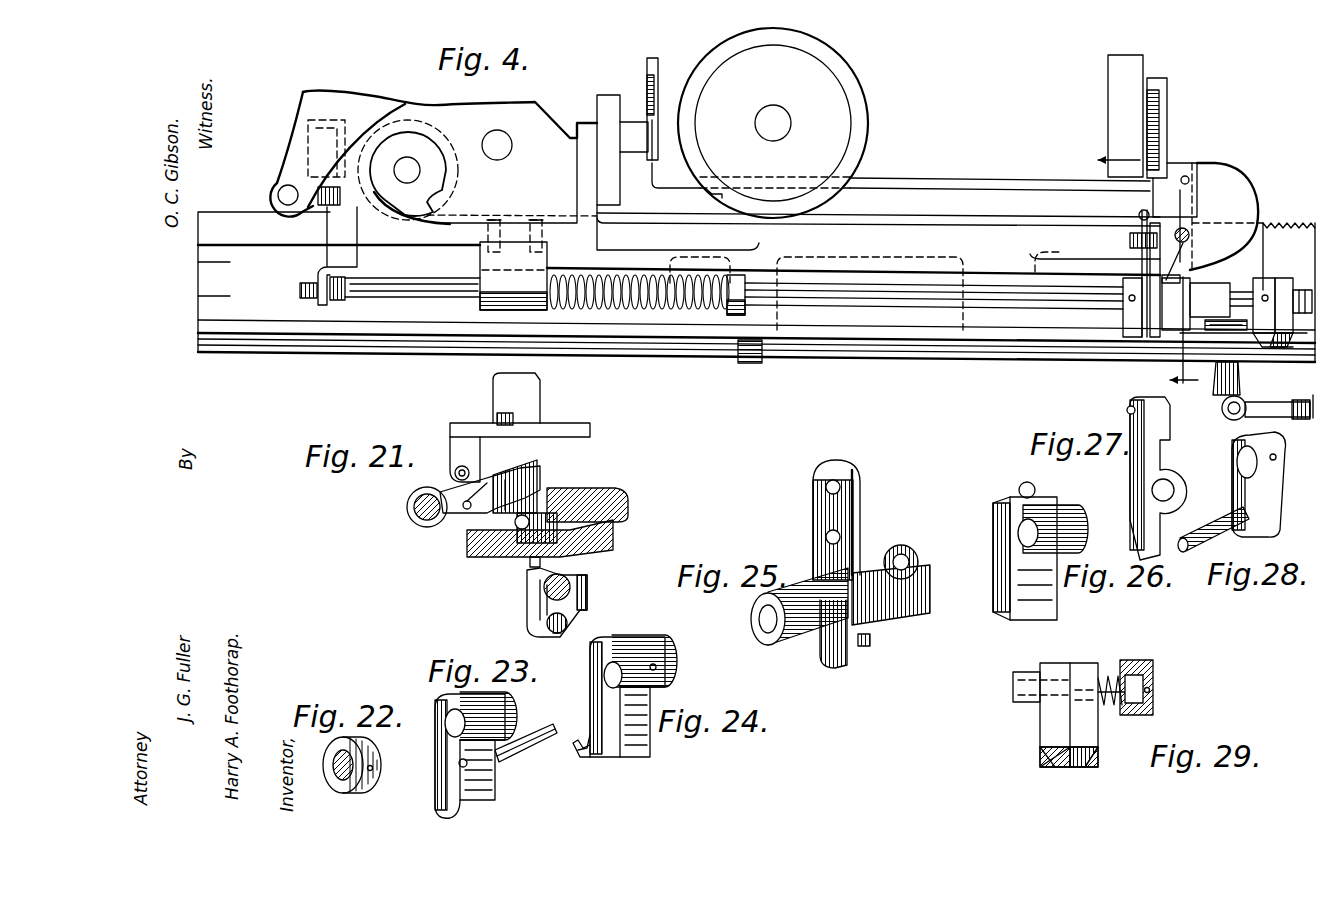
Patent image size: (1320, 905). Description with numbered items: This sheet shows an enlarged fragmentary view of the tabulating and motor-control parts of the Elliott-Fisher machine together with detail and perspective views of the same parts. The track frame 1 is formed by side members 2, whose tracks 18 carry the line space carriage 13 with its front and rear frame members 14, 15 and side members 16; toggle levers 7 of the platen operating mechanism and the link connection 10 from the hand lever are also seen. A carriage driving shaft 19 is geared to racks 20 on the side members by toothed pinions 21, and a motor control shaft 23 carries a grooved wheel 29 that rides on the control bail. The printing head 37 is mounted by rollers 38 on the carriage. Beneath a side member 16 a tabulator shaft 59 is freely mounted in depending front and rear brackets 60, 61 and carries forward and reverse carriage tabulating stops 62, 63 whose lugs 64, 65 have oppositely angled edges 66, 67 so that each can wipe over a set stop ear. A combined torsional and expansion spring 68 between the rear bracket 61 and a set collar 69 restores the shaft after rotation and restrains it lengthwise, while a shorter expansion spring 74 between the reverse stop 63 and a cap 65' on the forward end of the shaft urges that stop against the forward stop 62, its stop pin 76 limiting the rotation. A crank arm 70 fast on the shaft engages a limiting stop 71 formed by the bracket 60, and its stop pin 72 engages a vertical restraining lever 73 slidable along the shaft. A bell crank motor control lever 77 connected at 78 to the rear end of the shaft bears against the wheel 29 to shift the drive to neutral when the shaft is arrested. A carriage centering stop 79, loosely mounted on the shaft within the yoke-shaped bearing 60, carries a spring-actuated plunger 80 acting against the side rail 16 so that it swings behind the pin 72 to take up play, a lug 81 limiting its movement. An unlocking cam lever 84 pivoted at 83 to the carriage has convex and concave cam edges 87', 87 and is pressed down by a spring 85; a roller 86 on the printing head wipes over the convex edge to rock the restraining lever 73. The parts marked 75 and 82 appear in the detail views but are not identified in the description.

In FIG. 4, the track frame 1 is at (208, 263).
In FIG. 4, the side members 2 is at (212, 295).
In FIG. 4, the toggle levers 7 is at (1241, 383).
In FIG. 4, the link connection 10 is at (1300, 405).
In FIG. 4, the line space carriage 13 is at (558, 90).
In FIG. 4, the front frame member 14 is at (1167, 173).
In FIG. 4, the rear frame member 15 is at (608, 97).
In FIG. 4, the side members 16 is at (944, 246).
In FIG. 21, the side members 16 is at (610, 489).
In FIG. 4, the tracks 18 is at (214, 212).
In FIG. 4, the carriage driving shaft 19 is at (505, 124).
In FIG. 4, the racks 20 is at (1312, 217).
In FIG. 4, the toothed pinions 21 is at (1134, 275).
In FIG. 4, the motor control shaft 23 is at (413, 175).
In FIG. 4, the grooved wheel 29 is at (372, 188).
In FIG. 4, the printing head 37 is at (901, 123).
In FIG. 21, the printing head 37 is at (541, 418).
In FIG. 4, the rollers 38 is at (1167, 84).
In FIG. 4, the tabulator shaft 59 is at (900, 298).
In FIG. 21, the tabulator shaft 59 is at (572, 586).
In FIG. 29, the tabulator shaft 59 is at (1023, 680).
In FIG. 4, the front bracket 60 is at (1178, 305).
In FIG. 25, the front bracket 60 is at (862, 508).
In FIG. 4, the rear bracket 61 is at (513, 265).
In FIG. 4, the forward carriage tabulating stop 62 is at (1265, 290).
In FIG. 24, the forward carriage tabulating stop 62 is at (633, 732).
In FIG. 29, the forward carriage tabulating stop 62 is at (1043, 713).
In FIG. 4, the reverse carriage tabulating stop 63 is at (1287, 292).
In FIG. 23, the reverse carriage tabulating stop 63 is at (492, 787).
In FIG. 29, the reverse carriage tabulating stop 63 is at (1090, 730).
In FIG. 4, the lug 64 is at (1262, 345).
In FIG. 24, the lug 64 is at (580, 760).
In FIG. 29, the lug 64 is at (1047, 748).
In FIG. 4, the lug 65 is at (1283, 329).
In FIG. 23, the lug 65 is at (456, 755).
In FIG. 29, the lug 65 is at (1102, 750).
In FIG. 22, the cap 65' is at (368, 762).
In FIG. 29, the cap 65' is at (1151, 676).
In FIG. 4, the angled edge 66 is at (1225, 332).
In FIG. 24, the angled edge 66 is at (587, 738).
In FIG. 29, the angled edge 66 is at (1045, 760).
In FIG. 4, the angled edge 67 is at (1318, 412).
In FIG. 29, the angled edge 67 is at (1097, 760).
In FIG. 4, the combined torsional and expansion spring 68 is at (697, 310).
In FIG. 4, the set collar 69 is at (745, 309).
In FIG. 4, the crank arm 70 is at (1125, 322).
In FIG. 28, the crank arm 70 is at (1275, 508).
In FIG. 4, the limiting stop 71 is at (1140, 283).
In FIG. 21, the limiting stop 71 is at (575, 625).
In FIG. 25, the limiting stop 71 is at (920, 568).
In FIG. 4, the stop pin 72 is at (1157, 337).
In FIG. 21, the stop pin 72 is at (565, 638).
In FIG. 28, the stop pin 72 is at (1209, 534).
In FIG. 4, the restraining lever 73 is at (1143, 337).
In FIG. 21, the restraining lever 73 is at (605, 527).
In FIG. 27, the restraining lever 73 is at (1137, 527).
In FIG. 4, the expansion spring 74 is at (1302, 290).
In FIG. 29, the expansion spring 74 is at (1110, 672).
In FIG. 25, the sleeve 75 is at (825, 648).
In FIG. 4, the stop pin 76 is at (1250, 326).
In FIG. 23, the stop pin 76 is at (533, 728).
In FIG. 4, the bell crank motor control lever 77 is at (337, 249).
In FIG. 4, the connection 78 is at (300, 296).
In FIG. 4, the carriage centering stop 79 is at (1186, 300).
In FIG. 21, the carriage centering stop 79 is at (535, 610).
In FIG. 26, the carriage centering stop 79 is at (1005, 600).
In FIG. 4, the spring-actuated plunger 80 is at (1177, 255).
In FIG. 21, the spring-actuated plunger 80 is at (528, 563).
In FIG. 26, the spring-actuated plunger 80 is at (1020, 488).
In FIG. 25, the lug 81 is at (871, 643).
In FIG. 21, the roller 82 is at (557, 530).
In FIG. 21, the pivot 83 is at (407, 514).
In FIG. 21, the unlocking cam lever 84 is at (556, 465).
In FIG. 21, the spring 85 is at (465, 510).
In FIG. 21, the roller 86 is at (478, 468).
In FIG. 21, the concave cam edge 87 is at (501, 495).
In FIG. 21, the convex cam edge 87' is at (543, 480).